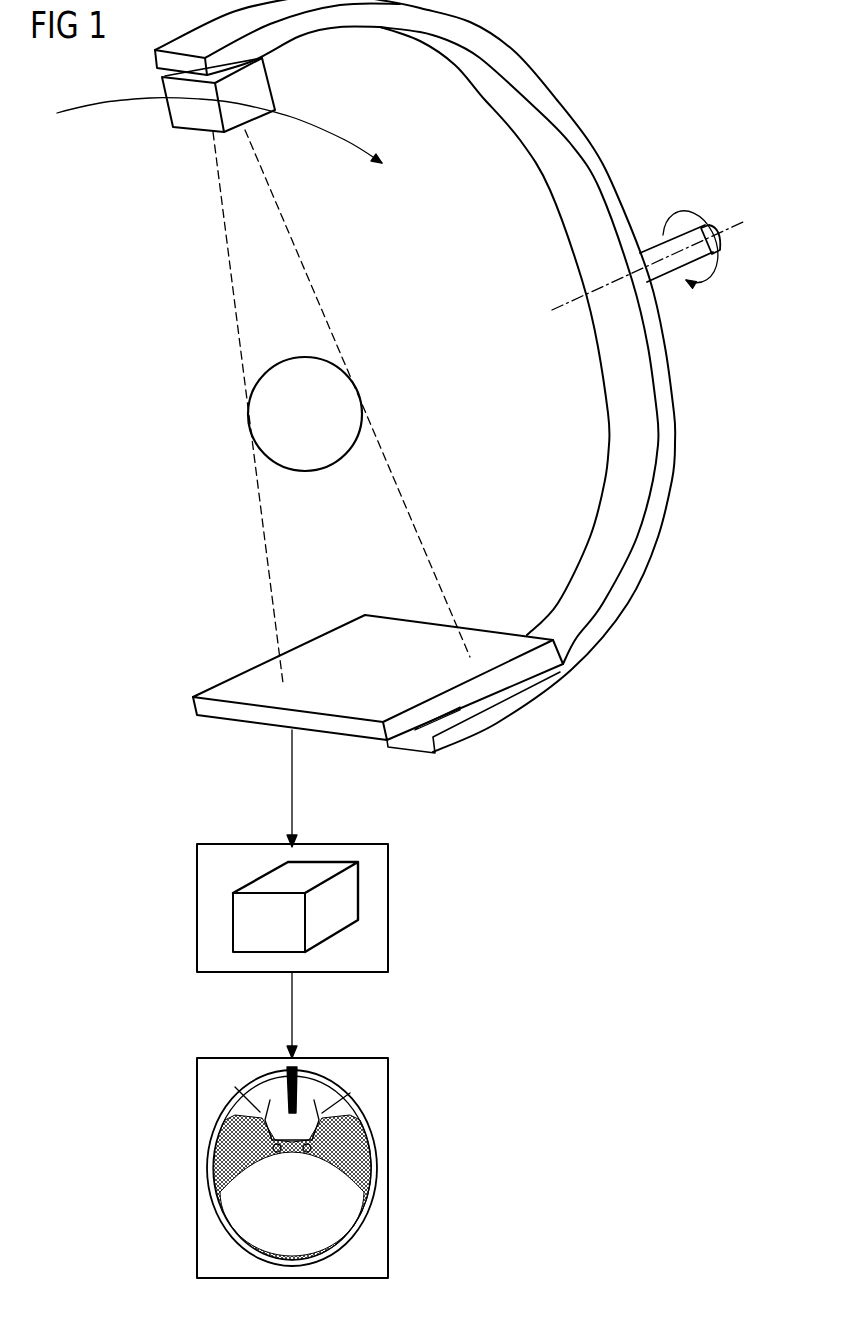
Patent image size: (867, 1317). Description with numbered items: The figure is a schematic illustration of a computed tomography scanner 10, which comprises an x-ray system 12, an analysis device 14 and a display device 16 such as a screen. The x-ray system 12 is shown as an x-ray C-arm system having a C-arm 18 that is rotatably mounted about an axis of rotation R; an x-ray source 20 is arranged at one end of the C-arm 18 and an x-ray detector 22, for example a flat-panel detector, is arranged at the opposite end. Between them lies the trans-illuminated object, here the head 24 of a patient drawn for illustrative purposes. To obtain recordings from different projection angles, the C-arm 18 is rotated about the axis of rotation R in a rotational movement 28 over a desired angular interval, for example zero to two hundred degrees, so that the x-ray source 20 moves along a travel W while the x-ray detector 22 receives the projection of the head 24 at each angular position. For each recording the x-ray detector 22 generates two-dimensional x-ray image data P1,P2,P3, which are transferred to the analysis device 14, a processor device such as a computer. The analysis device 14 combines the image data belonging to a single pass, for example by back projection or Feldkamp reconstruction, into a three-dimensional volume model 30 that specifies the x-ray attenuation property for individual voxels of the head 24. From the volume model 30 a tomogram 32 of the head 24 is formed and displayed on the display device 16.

The tomography scanner 10 is at (748, 67).
The x-ray system 12 is at (588, 62).
The analysis device 14 is at (197, 915).
The display device 16 is at (197, 1128).
The C-arm 18 is at (596, 162).
The x-ray source 20 is at (188, 118).
The x-ray detector 22 is at (210, 708).
The head 24 is at (260, 430).
The rotational movement 28 is at (713, 280).
The 3D volume model 30 is at (360, 893).
The tomogram 32 is at (243, 1205).
The travel W is at (77, 113).
The axis of rotation R is at (730, 222).
The 2D x-ray image data P1,P2,P3 is at (293, 797).